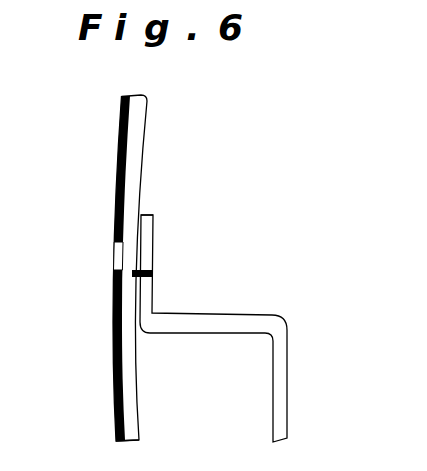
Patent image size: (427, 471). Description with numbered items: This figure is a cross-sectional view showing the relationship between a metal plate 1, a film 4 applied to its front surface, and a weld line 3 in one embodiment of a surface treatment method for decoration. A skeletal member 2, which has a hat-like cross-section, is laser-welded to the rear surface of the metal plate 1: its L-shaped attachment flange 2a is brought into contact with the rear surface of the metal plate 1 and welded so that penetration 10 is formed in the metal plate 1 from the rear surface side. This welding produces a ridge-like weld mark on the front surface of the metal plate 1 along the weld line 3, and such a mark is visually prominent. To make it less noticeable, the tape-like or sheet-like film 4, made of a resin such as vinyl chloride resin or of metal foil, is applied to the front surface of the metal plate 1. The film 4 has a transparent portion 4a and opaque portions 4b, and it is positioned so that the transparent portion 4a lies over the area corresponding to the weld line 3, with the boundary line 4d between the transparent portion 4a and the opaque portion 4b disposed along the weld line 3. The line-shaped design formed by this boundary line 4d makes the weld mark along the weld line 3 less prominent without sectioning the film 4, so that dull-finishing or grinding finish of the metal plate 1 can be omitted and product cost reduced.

The metal plate 1 is at (133, 175).
The skeletal member 2 is at (279, 352).
The attachment flange 2a is at (150, 215).
The weld line 3 is at (152, 274).
The film 4 is at (112, 347).
The transparent portion 4a is at (116, 250).
The opaque portion 4b is at (122, 138).
The boundary line 4d is at (115, 270).
The penetration 10 is at (132, 258).